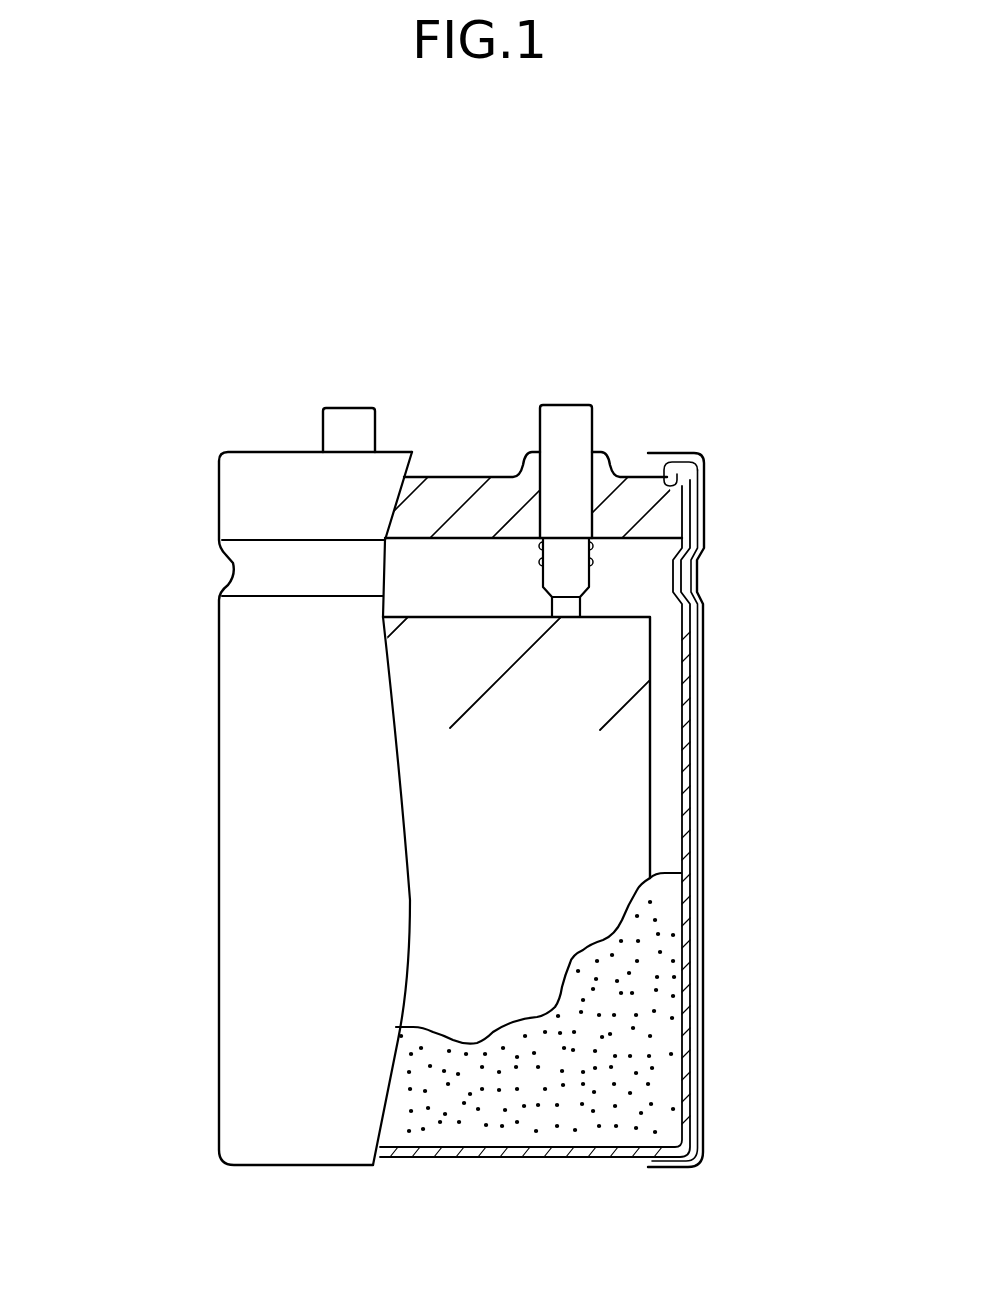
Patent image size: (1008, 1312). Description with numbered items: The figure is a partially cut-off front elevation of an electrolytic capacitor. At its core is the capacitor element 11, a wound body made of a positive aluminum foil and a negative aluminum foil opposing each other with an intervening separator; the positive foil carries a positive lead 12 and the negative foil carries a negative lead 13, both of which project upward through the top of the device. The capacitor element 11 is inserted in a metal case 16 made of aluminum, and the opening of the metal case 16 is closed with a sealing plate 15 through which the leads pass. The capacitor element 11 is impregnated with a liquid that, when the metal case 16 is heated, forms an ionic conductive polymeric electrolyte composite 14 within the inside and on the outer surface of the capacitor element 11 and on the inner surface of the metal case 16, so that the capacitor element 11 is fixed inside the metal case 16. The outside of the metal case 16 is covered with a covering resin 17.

The capacitor element 11 is at (620, 755).
The positive lead 12 is at (567, 423).
The negative lead 13 is at (348, 420).
The electrolyte composite 14 is at (640, 1067).
The sealing plate 15 is at (452, 490).
The metal case 16 is at (693, 927).
The covering resin 17 is at (250, 867).